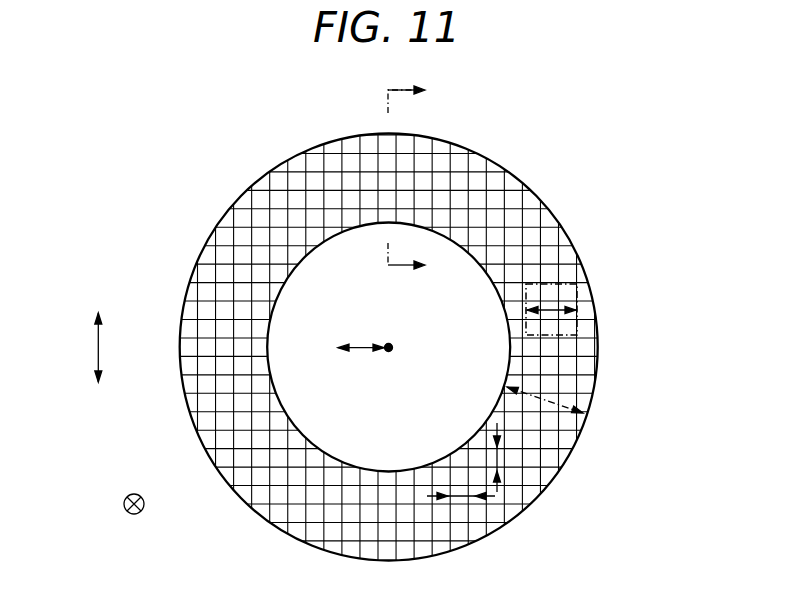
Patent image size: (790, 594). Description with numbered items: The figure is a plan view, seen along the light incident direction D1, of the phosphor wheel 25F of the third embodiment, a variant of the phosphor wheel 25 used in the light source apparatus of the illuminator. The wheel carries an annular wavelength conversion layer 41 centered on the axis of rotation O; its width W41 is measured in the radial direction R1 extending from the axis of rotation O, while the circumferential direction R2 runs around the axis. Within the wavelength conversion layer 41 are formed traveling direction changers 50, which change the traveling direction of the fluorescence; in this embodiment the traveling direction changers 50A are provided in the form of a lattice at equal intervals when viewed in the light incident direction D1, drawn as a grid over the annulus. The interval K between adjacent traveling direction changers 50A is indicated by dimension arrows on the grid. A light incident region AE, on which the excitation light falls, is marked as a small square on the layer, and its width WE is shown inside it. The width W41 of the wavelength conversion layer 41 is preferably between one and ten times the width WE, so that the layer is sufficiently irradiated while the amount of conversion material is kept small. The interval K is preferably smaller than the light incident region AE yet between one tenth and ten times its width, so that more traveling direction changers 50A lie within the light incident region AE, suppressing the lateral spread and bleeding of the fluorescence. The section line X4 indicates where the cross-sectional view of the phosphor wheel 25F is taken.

The phosphor wheel 25F is at (391, 321).
The phosphor wheel 25 is at (414, 321).
The traveling direction changers 50A is at (390, 332).
The traveling direction changers 50 is at (390, 332).
The wavelength conversion layer 41 is at (532, 201).
The section line X4- X4 is at (423, 179).
The width of the light incident region WE is at (552, 309).
The light incident region AE is at (577, 322).
The width of the wavelength conversion layer W41 is at (553, 398).
The interval between traveling direction changers K is at (460, 497).
The radial direction R1 is at (361, 332).
The circumferential direction R2 is at (81, 347).
The axis of rotation O is at (393, 350).
The light incident direction D1 is at (118, 503).